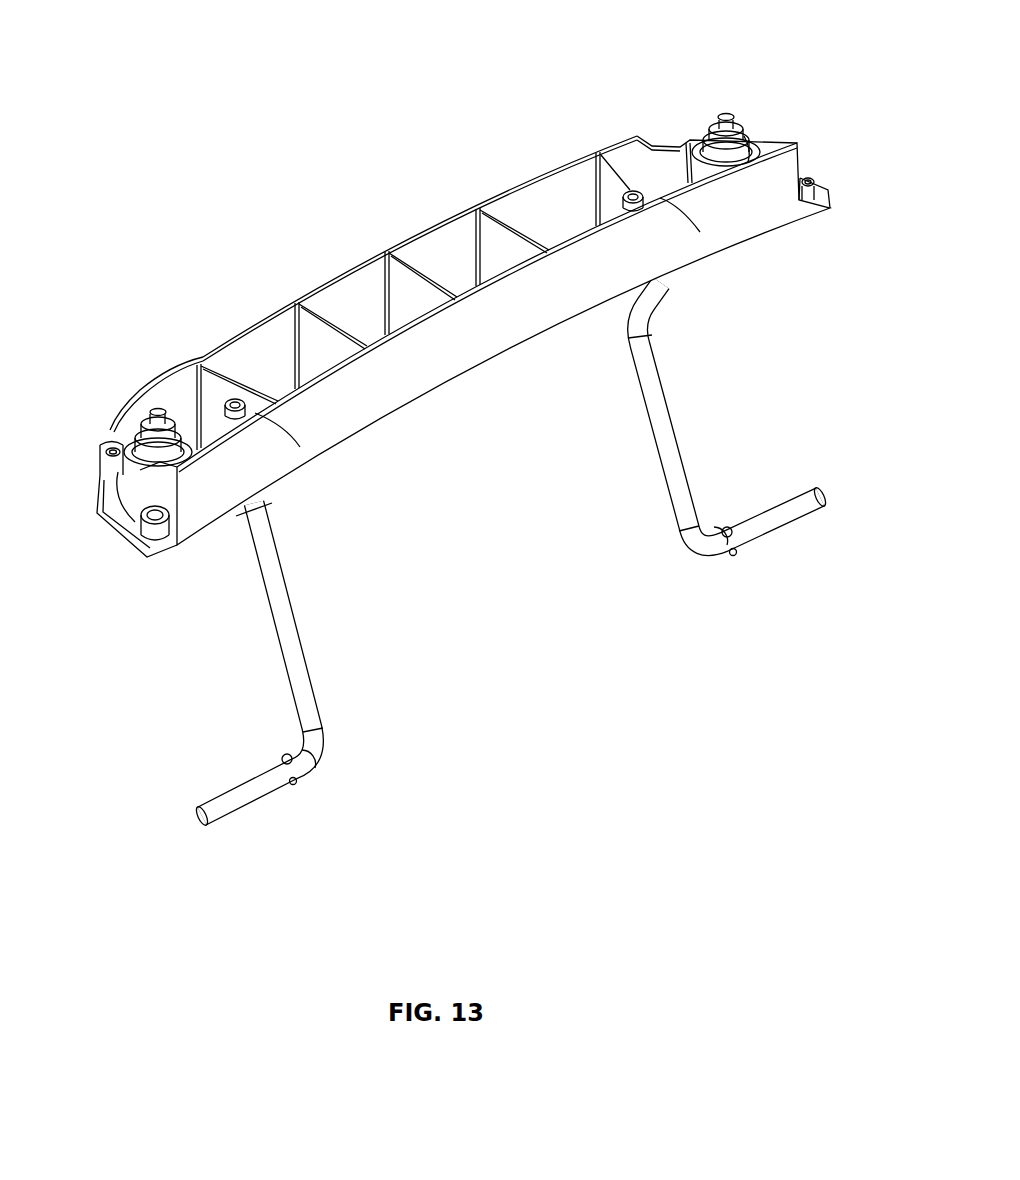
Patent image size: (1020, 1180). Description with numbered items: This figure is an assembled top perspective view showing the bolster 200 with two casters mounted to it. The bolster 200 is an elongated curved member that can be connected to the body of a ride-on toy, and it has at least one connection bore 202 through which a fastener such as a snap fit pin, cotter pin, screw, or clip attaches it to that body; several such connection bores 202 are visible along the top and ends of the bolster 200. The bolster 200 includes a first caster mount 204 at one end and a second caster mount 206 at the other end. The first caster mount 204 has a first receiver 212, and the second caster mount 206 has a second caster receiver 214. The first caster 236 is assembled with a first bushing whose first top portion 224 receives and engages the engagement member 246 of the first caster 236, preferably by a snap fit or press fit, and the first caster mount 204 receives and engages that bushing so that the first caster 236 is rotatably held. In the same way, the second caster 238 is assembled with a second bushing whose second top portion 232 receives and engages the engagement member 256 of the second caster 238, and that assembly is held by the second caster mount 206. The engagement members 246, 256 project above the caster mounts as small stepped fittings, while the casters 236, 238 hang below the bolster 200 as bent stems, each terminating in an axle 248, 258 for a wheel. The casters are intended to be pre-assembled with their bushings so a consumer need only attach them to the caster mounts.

The bolster 200 is at (290, 186).
The connection bore 202 is at (810, 192).
The first caster mount 204 is at (126, 498).
The second caster mount 206 is at (768, 142).
The first receiver 212 is at (128, 432).
The second caster receiver 214 is at (747, 138).
The first top portion 224 is at (180, 405).
The second top portion 232 is at (714, 134).
The first caster 236 is at (322, 647).
The second caster 238 is at (636, 495).
The engagement member 246 is at (158, 408).
The axle 248 is at (244, 790).
The engagement member 256 is at (723, 114).
The axle 258 is at (792, 528).